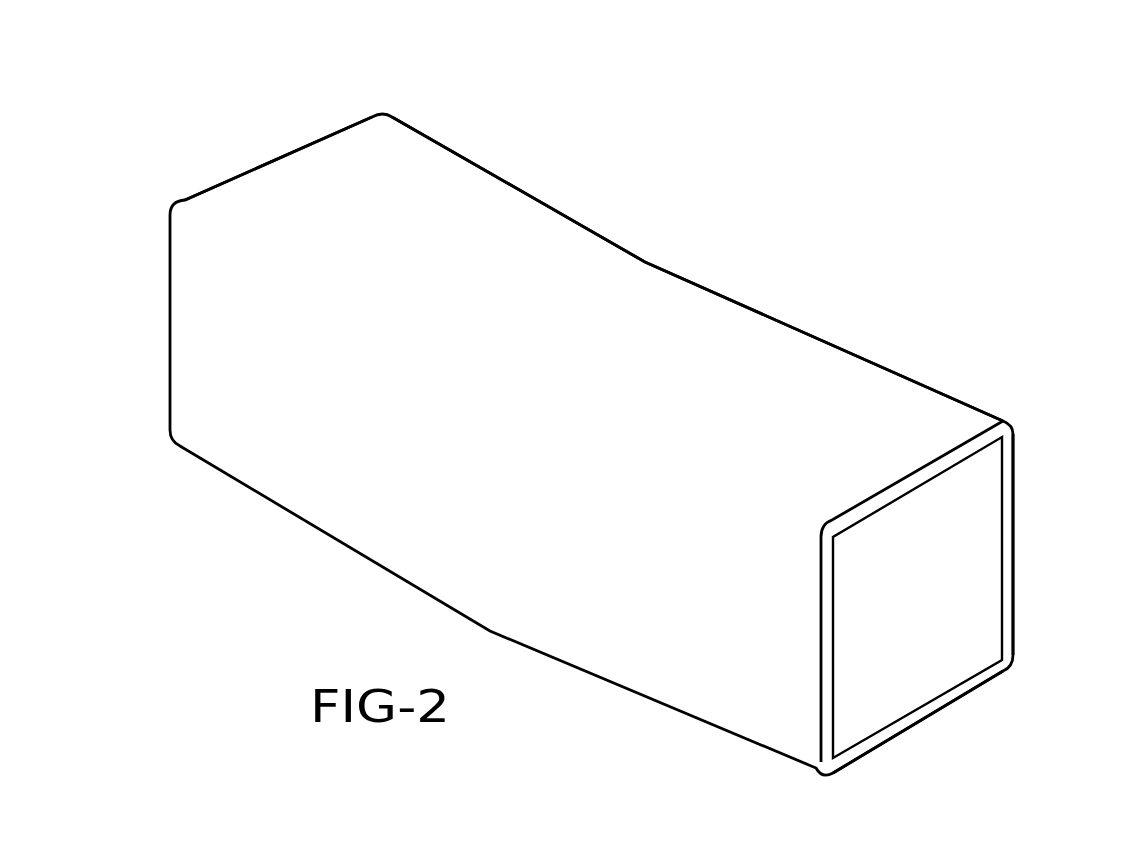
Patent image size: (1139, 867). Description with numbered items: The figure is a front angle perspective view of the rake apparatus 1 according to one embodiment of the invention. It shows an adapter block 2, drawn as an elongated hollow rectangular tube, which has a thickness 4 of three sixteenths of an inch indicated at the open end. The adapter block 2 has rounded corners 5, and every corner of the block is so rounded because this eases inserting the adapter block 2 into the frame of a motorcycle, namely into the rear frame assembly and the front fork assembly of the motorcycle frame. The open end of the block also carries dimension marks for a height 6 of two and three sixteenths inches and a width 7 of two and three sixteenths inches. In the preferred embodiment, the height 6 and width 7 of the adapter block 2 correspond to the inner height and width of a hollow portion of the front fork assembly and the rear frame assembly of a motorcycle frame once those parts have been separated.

The rake apparatus 1 is at (595, 424).
The adapter block 2 is at (676, 328).
The thickness 4 is at (954, 517).
The rounded corners 5 is at (386, 109).
The height 6 is at (1036, 420).
The width 7 is at (1002, 713).